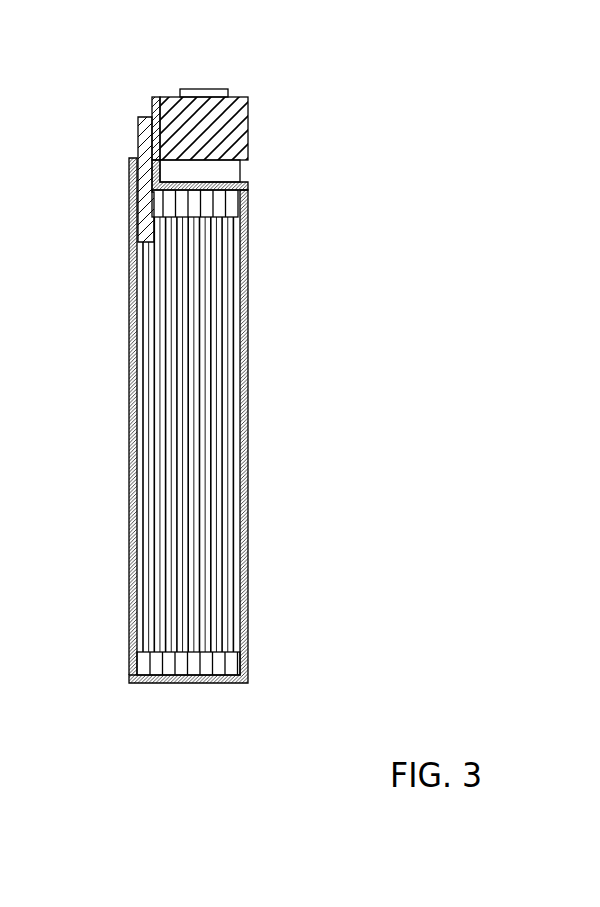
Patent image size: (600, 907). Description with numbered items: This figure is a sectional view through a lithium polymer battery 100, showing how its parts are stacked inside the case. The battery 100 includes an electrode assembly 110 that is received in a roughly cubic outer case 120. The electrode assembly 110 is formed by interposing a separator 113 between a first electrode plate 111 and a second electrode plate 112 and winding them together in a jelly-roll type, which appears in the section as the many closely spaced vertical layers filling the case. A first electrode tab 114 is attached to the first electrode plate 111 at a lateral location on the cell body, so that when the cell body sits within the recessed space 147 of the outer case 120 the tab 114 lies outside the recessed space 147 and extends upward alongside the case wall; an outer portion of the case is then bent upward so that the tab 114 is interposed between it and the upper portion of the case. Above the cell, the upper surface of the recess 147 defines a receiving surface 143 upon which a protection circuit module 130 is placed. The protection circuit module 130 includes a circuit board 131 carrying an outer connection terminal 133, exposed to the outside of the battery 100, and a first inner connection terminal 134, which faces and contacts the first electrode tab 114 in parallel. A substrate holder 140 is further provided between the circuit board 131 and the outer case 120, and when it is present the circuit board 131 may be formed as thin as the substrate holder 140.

The lithium polymer battery 100 is at (87, 26).
The electrode assembly 110 is at (329, 430).
The first electrode plate 111 is at (228, 433).
The second electrode plate 112 is at (218, 496).
The separator 113 is at (223, 465).
The first electrode tab 114 is at (138, 136).
The outer case 120 is at (264, 352).
The protection circuit module 130 is at (264, 102).
The circuit board 131 is at (248, 137).
The outer connection terminal 133 is at (207, 89).
The first inner connection terminal 134 is at (151, 104).
The substrate holder 140 is at (248, 170).
The receiving surface 143 is at (137, 175).
The recessed space 147 is at (140, 460).